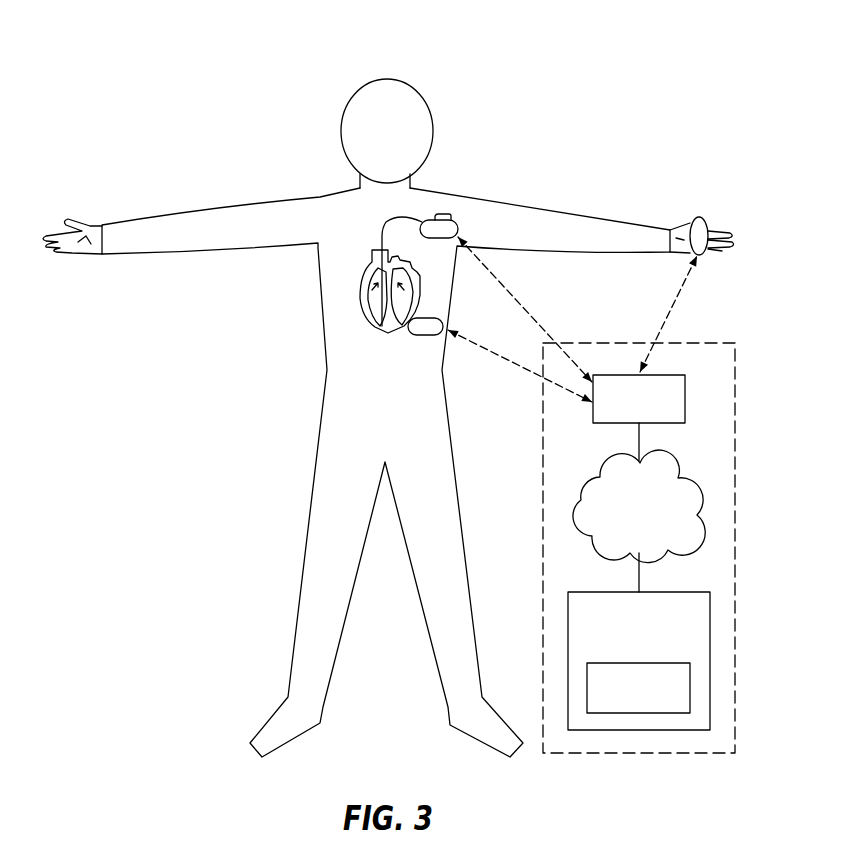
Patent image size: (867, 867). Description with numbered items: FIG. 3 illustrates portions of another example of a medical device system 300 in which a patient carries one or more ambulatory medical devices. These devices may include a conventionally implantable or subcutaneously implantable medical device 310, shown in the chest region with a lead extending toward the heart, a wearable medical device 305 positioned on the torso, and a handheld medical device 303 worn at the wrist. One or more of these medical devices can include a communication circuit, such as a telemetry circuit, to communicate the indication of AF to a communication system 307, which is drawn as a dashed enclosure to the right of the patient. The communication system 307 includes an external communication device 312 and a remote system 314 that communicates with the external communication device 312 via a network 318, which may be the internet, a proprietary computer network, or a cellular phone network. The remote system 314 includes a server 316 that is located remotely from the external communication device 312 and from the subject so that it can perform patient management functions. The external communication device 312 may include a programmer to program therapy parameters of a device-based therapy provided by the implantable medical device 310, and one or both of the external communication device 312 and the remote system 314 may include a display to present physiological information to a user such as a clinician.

The medical device system 300 is at (214, 110).
The handheld medical device 303 is at (710, 222).
The wearable medical device 305 is at (427, 336).
The communication system 307 is at (690, 343).
The implantable medical device 310 is at (443, 214).
The external communication device 312 is at (663, 375).
The remote system 314 is at (658, 592).
The server 316 is at (640, 663).
The network 318 is at (677, 472).